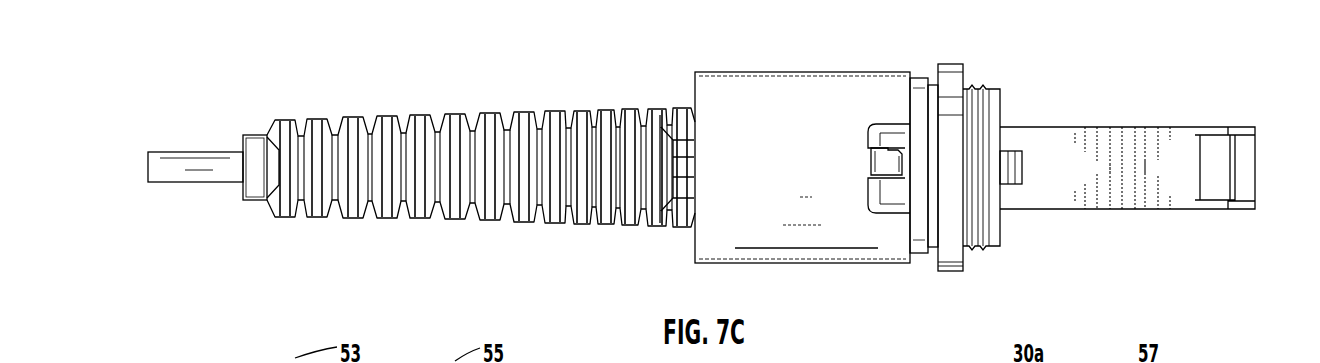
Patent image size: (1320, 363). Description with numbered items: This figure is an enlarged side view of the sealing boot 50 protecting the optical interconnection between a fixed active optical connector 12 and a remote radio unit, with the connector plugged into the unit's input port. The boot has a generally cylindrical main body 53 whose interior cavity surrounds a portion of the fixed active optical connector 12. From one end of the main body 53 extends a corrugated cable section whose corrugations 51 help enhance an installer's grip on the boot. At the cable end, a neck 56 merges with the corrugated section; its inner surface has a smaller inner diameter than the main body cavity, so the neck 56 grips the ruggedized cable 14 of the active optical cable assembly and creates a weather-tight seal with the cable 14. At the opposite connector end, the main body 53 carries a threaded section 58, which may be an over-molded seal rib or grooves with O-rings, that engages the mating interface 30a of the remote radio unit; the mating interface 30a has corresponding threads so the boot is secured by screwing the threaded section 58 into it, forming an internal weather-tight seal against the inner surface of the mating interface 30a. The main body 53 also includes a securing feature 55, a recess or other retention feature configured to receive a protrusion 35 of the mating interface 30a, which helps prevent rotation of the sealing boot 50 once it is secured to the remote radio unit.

The sealing boot 50 is at (552, 56).
The ruggedized cable 14 is at (198, 175).
The neck 56 is at (255, 175).
The corrugations 51 is at (455, 198).
The main body 53 is at (772, 95).
The securing feature 55 is at (890, 138).
The protrusion 35 is at (887, 168).
The mating interface 30a is at (952, 78).
The threaded section 58 is at (990, 228).
The fixed active optical connector 12 is at (1185, 135).